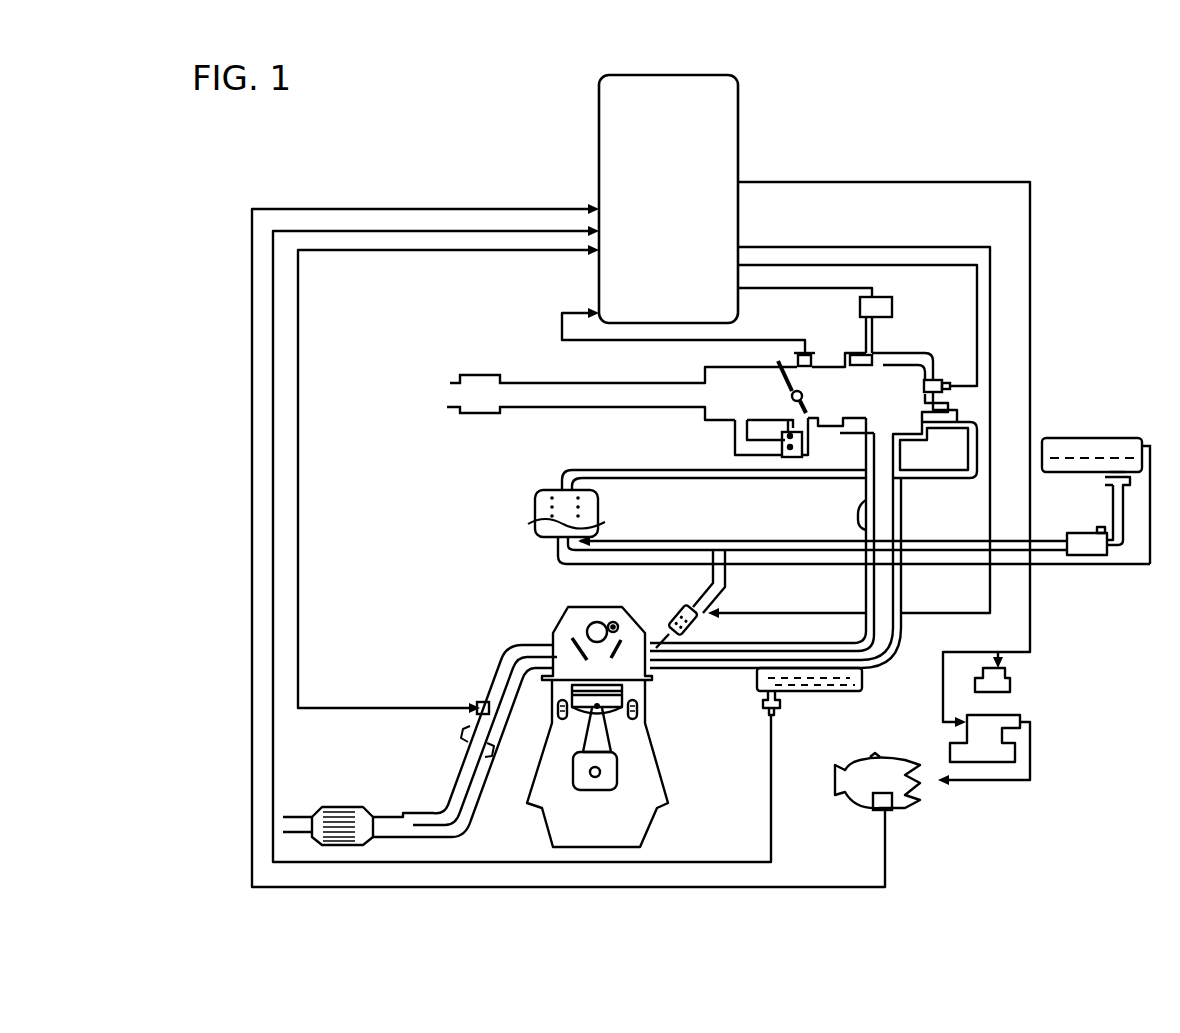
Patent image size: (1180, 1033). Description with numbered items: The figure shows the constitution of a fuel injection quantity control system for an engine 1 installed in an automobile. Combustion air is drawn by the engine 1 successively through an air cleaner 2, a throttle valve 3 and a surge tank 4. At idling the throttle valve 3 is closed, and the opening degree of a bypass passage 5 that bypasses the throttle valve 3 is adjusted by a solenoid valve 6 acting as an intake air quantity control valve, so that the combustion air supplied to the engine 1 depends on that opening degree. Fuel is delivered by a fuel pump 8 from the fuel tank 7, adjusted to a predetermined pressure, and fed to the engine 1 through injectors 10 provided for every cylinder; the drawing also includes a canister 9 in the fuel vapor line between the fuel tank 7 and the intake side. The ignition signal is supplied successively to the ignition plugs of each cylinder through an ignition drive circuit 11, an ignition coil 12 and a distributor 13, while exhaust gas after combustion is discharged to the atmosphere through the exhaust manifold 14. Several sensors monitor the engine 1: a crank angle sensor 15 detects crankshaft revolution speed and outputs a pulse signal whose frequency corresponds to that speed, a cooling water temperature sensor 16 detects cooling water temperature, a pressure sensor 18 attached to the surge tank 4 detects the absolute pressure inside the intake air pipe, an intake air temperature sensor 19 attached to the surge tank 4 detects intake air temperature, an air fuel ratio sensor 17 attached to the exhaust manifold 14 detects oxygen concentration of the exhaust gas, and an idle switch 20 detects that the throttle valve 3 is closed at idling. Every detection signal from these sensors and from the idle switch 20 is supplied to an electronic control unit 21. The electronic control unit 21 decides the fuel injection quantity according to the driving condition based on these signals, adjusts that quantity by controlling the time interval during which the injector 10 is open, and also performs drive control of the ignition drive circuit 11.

The engine 1 is at (665, 765).
The air cleaner 2 is at (487, 417).
The throttle valve 3 is at (804, 403).
The surge tank 4 is at (903, 353).
The bypass passage 5 is at (733, 442).
The solenoid valve 6 is at (805, 458).
The fuel tank 7 is at (1082, 436).
The fuel pump 8 is at (1068, 536).
The canister 9 is at (600, 510).
The injector 10 is at (672, 612).
The ignition drive circuit 11 is at (1010, 683).
The ignition coil 12 is at (1010, 712).
The distributor 13 is at (878, 757).
The exhaust manifold 14 is at (505, 651).
The crank angle sensor 15 is at (880, 816).
The cooling water temperature sensor 16 is at (780, 703).
The air fuel ratio sensor 17 is at (478, 703).
The pressure sensor 18 is at (893, 302).
The intake air temperature sensor 19 is at (950, 392).
The idle switch 20 is at (809, 350).
The electronic control unit 21 is at (738, 148).